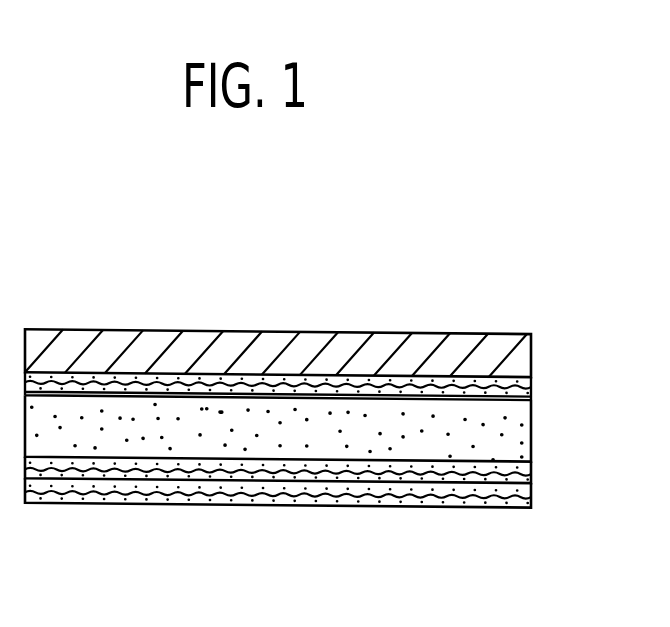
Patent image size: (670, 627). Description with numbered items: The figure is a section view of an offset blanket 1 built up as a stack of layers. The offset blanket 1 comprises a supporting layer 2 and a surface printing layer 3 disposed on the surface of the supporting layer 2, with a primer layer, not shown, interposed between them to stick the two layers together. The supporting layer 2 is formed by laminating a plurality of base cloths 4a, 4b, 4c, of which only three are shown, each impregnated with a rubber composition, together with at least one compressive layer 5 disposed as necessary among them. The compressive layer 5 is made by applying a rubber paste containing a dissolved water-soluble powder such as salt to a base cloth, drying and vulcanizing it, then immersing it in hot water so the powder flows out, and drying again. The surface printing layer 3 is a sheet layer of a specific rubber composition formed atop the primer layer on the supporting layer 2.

The offset blanket 1 is at (223, 305).
The supporting layer 2 is at (544, 378).
The surface printing layer 3 is at (465, 353).
The base cloth 4a is at (208, 497).
The base cloth 4b is at (278, 467).
The base cloth 4c is at (315, 392).
The compressive layer 5 is at (427, 443).